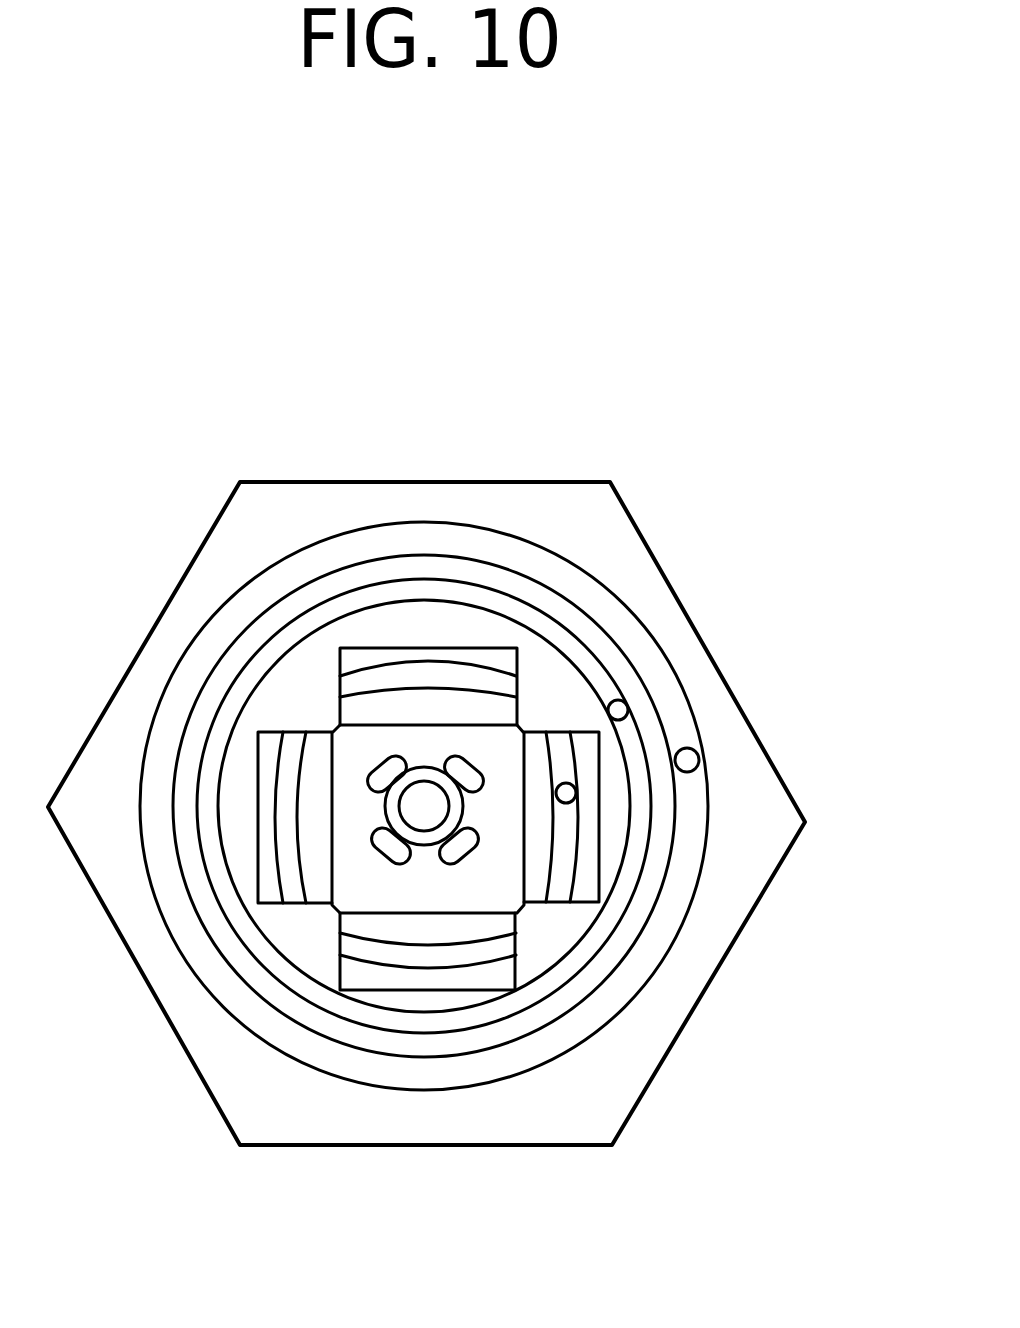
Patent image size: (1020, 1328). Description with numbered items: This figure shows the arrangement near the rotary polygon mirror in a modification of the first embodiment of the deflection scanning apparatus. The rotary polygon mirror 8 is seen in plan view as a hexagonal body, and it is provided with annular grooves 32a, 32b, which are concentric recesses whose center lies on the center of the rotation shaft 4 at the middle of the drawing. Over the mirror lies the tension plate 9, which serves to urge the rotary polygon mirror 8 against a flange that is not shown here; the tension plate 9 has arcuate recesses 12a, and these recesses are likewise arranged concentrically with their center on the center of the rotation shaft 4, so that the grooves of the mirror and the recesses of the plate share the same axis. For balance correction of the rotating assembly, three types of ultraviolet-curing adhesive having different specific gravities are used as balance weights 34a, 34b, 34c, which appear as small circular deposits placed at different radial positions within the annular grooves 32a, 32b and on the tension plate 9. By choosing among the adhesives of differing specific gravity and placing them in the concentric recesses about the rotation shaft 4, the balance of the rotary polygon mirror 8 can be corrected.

The rotary polygon mirror 8 is at (625, 547).
The tension plate 9 is at (448, 652).
The arcuate recesses 12a is at (420, 957).
The rotation shaft 4 is at (412, 806).
The annular groove 32a is at (630, 982).
The annular groove 32b is at (538, 988).
The balance weight 34a is at (695, 757).
The balance weight 34b is at (626, 706).
The balance weight 34c is at (576, 793).